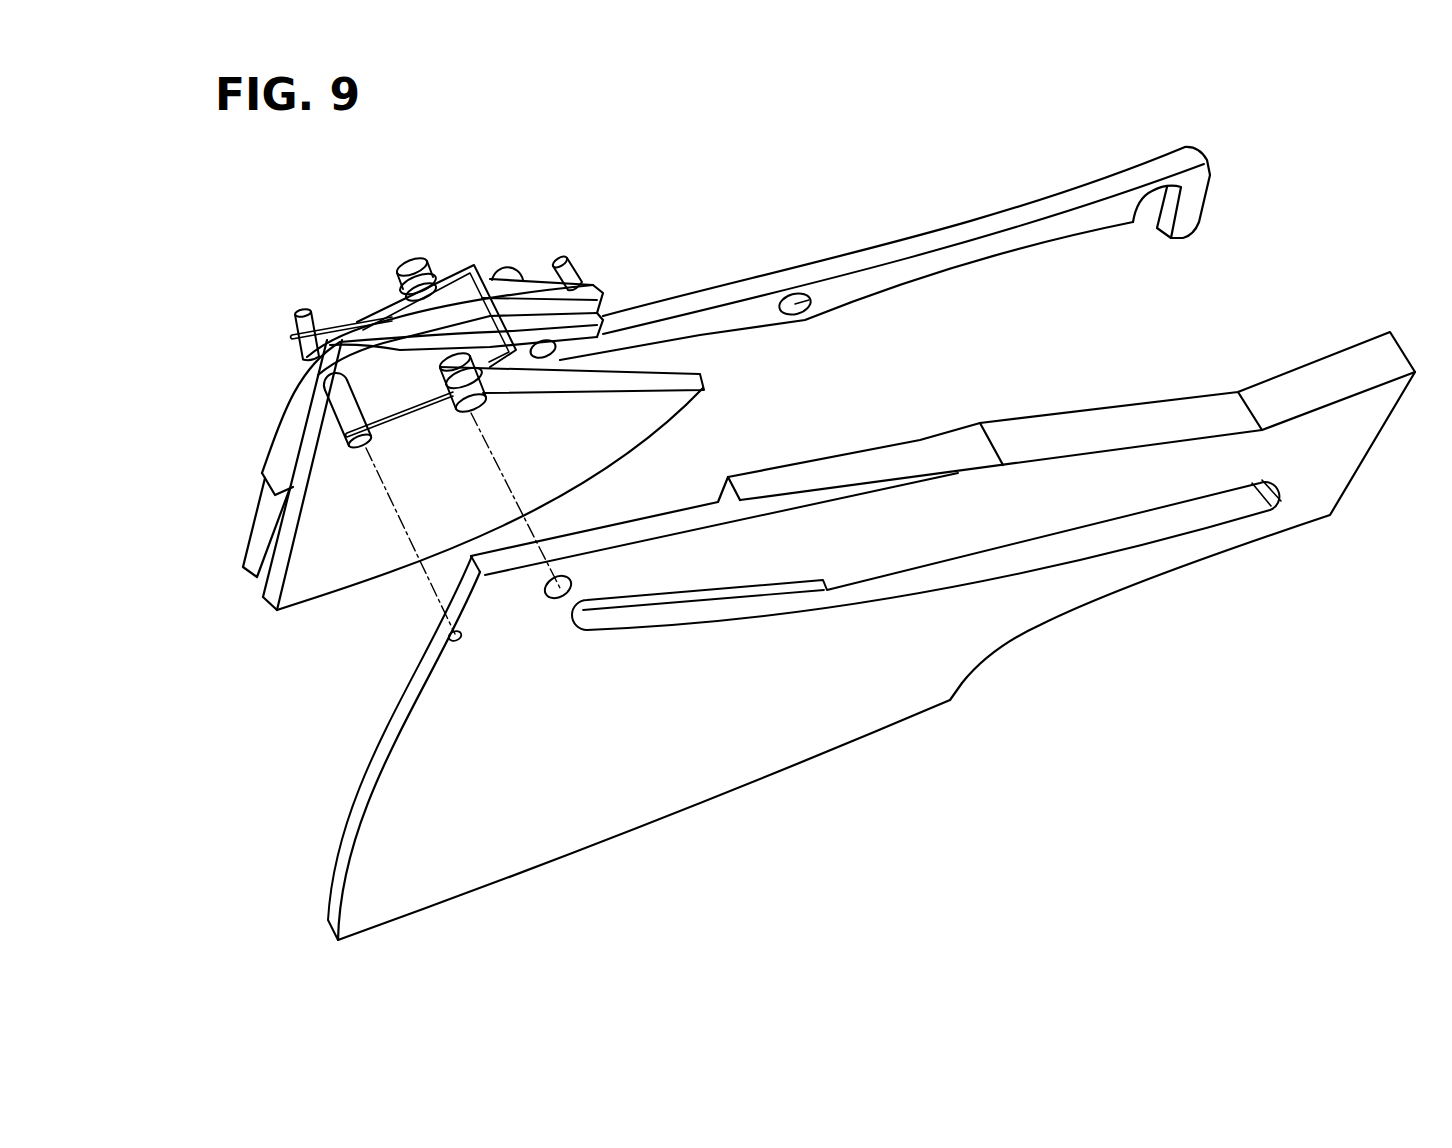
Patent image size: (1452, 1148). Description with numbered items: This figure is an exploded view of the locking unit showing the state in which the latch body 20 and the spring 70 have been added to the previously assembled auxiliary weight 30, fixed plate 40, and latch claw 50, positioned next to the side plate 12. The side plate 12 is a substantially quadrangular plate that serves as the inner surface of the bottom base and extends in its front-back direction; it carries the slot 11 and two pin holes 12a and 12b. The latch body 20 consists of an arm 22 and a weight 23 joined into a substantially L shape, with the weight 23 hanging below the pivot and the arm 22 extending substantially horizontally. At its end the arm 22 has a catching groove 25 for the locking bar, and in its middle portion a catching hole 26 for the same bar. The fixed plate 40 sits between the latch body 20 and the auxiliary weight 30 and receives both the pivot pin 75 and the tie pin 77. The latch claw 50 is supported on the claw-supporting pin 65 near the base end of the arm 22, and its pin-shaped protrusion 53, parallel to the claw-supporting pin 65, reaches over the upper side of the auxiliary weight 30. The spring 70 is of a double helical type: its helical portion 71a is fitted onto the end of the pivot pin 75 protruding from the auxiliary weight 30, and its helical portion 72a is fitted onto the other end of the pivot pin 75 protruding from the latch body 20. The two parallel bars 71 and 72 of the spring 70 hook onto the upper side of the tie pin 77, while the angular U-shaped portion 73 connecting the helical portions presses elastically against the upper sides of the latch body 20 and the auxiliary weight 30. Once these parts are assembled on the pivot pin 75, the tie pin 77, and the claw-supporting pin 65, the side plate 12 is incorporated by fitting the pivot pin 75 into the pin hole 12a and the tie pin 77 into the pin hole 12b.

The slot 11 is at (896, 588).
The side plate 12 is at (878, 722).
The pin hole 12a is at (556, 600).
The pin hole 12b is at (459, 643).
The latch body 20 is at (885, 264).
The arm 22 is at (928, 242).
The weight 23 is at (320, 586).
The catching groove 25 is at (1147, 213).
The catching hole 26 is at (805, 315).
The auxiliary weight 30 is at (246, 537).
The fixed plate 40 is at (280, 450).
The latch claw 50 is at (598, 283).
The pin-shaped protrusion 53 is at (564, 265).
The claw-supporting pin 65 is at (545, 357).
The spring 70 is at (439, 319).
The bar 71 is at (336, 332).
The helical portion 71a is at (409, 262).
The bar 72 is at (410, 405).
The helical portion 72a is at (466, 411).
The U-shaped portion 73 is at (475, 268).
The pivot pin 75 is at (405, 262).
The tie pin 77 is at (302, 312).